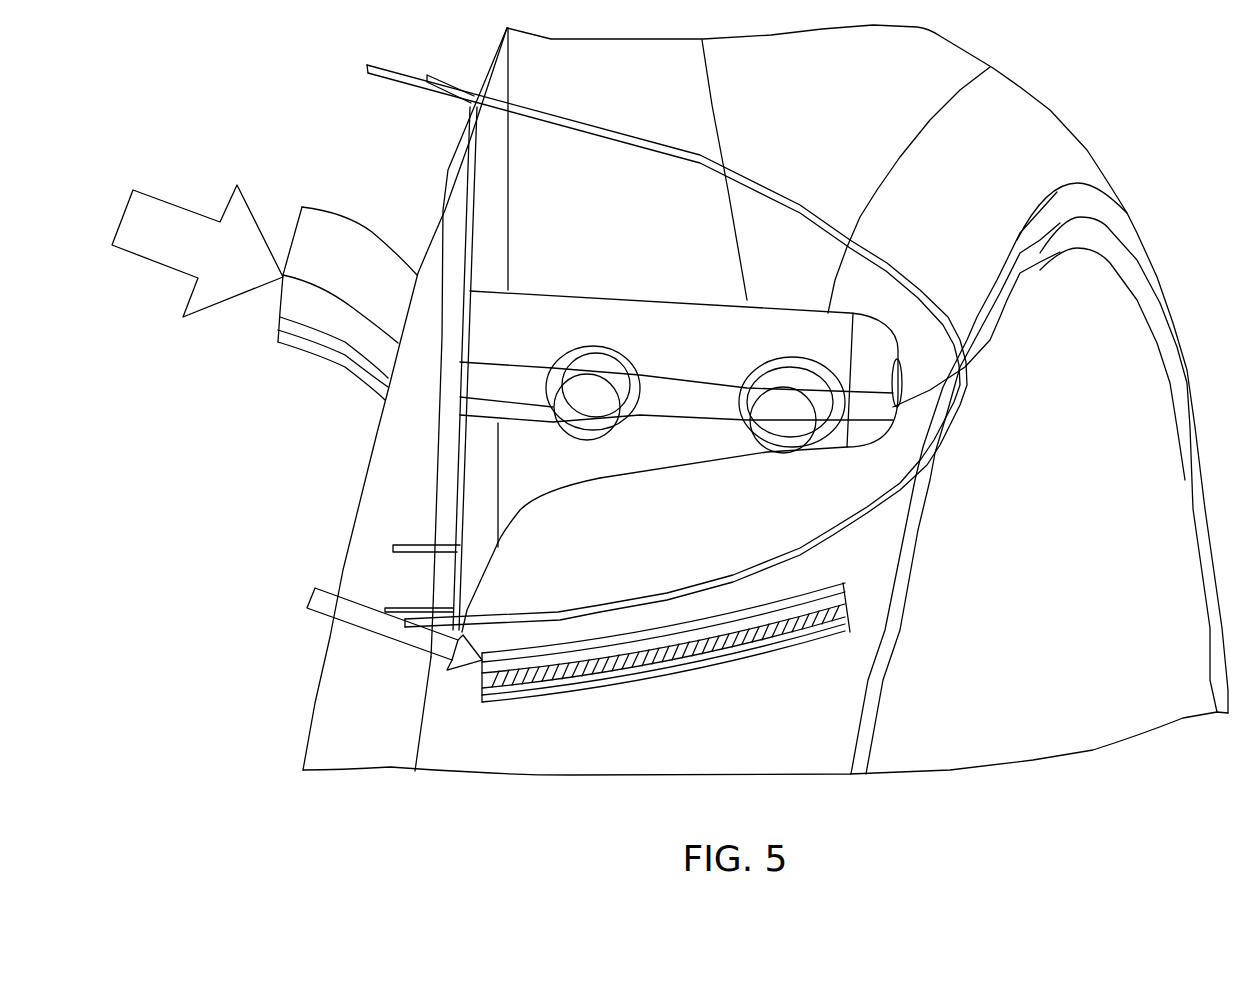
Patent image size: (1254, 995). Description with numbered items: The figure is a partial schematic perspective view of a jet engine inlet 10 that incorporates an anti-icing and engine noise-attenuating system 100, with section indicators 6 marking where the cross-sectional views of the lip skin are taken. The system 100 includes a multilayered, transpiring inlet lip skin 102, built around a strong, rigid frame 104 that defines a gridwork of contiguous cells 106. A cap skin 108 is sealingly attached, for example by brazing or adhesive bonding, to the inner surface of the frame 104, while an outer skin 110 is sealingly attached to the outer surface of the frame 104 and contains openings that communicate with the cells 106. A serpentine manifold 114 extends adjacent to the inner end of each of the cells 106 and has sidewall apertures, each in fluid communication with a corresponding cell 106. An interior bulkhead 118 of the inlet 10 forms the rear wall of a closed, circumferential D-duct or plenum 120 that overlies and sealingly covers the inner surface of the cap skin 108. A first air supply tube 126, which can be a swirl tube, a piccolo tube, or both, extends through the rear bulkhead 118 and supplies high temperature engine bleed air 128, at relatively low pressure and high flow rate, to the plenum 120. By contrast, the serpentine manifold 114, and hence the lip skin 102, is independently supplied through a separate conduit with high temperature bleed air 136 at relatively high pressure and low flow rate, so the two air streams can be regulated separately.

The jet engine inlet 10 is at (1085, 150).
The anti-icing and engine noise-attenuating system 100 is at (363, 150).
The inlet lip skin 102 is at (651, 708).
The frame 104 is at (513, 693).
The cells 106 is at (748, 647).
The cap skin 108 is at (415, 771).
The outer skin 110 is at (543, 700).
The serpentine manifold 114 is at (482, 663).
The interior bulkhead 118 is at (460, 466).
The plenum 120 is at (865, 473).
The first air supply tube 126 is at (797, 318).
The engine bleed air 128 is at (180, 207).
The bleed air 136 is at (360, 620).
The section line 6 is at (593, 633).